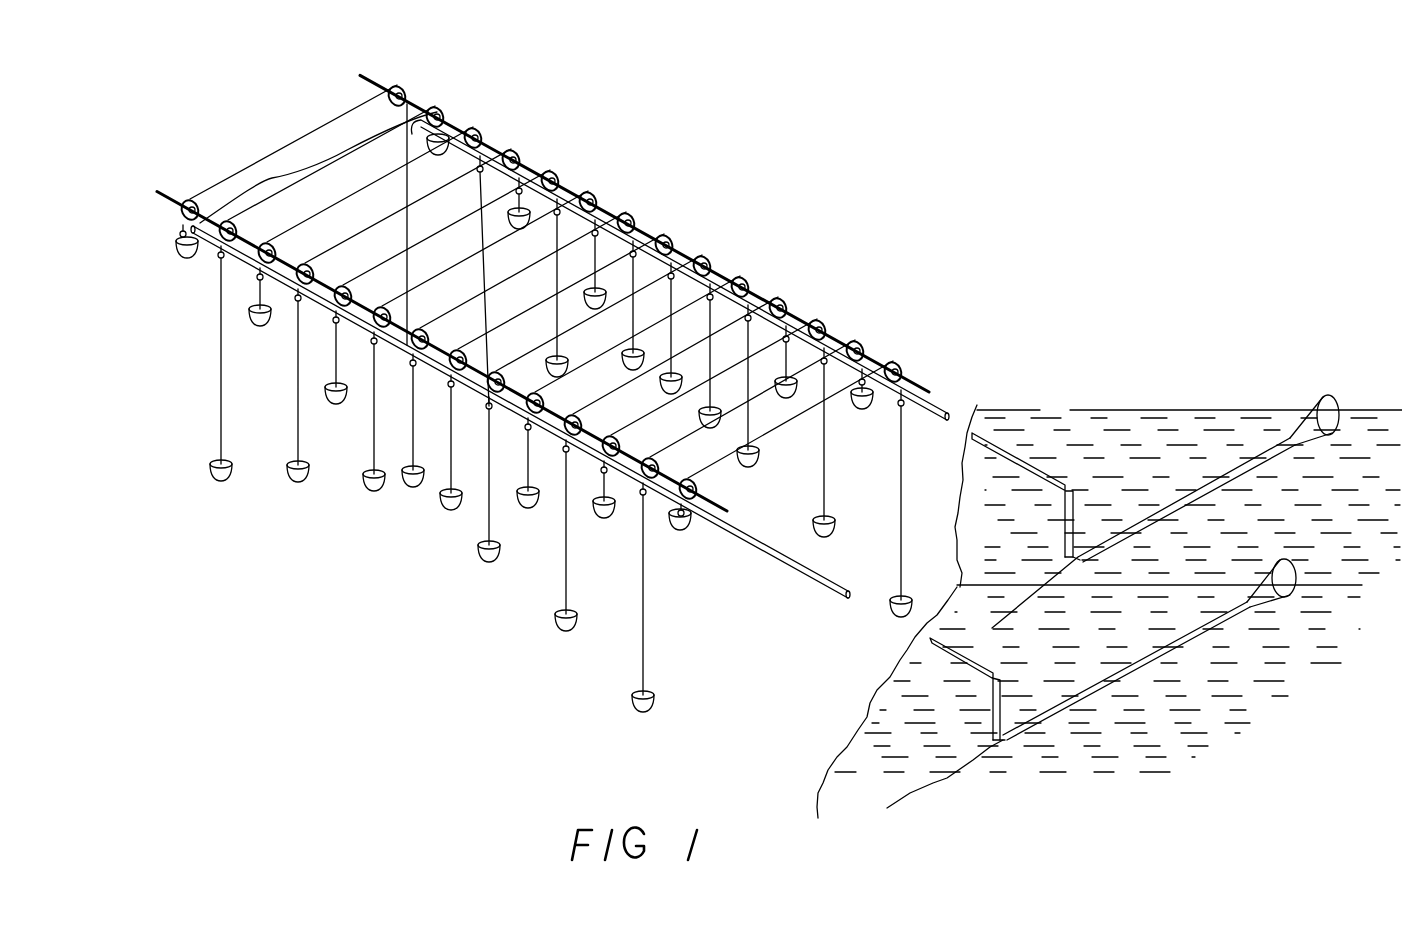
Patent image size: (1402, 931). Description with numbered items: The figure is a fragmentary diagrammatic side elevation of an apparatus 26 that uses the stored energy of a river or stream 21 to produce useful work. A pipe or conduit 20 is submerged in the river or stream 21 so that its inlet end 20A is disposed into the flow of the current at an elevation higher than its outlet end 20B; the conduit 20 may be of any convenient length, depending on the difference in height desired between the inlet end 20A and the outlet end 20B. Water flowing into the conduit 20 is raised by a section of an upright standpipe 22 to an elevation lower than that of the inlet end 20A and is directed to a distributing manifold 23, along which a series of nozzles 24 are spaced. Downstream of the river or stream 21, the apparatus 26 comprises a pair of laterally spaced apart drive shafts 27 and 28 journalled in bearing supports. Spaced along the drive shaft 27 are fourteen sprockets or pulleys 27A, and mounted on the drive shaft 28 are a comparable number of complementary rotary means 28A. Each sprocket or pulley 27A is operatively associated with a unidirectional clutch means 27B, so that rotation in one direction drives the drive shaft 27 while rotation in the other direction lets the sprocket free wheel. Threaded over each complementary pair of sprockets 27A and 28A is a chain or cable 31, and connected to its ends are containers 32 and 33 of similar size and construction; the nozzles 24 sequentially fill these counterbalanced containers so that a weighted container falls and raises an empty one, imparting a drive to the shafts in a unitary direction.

The pipe or conduit 20 is at (1127, 574).
The inlet end 20A is at (1322, 398).
The outlet end 20B is at (1080, 563).
The river or stream 21 is at (1147, 410).
The upright standpipe 22 is at (1060, 500).
The distributing manifold 23 is at (756, 300).
The nozzles 24 is at (590, 205).
The apparatus 26 is at (517, 385).
The drive shaft 27 is at (158, 194).
The sprocket or pulley 27A is at (407, 103).
The unidirectional clutch means 27B is at (443, 120).
The drive shaft 28 is at (921, 390).
The complementary rotary means 28A is at (698, 263).
The chain or cable 31 is at (645, 638).
The container 32 is at (862, 409).
The container 33 is at (337, 406).